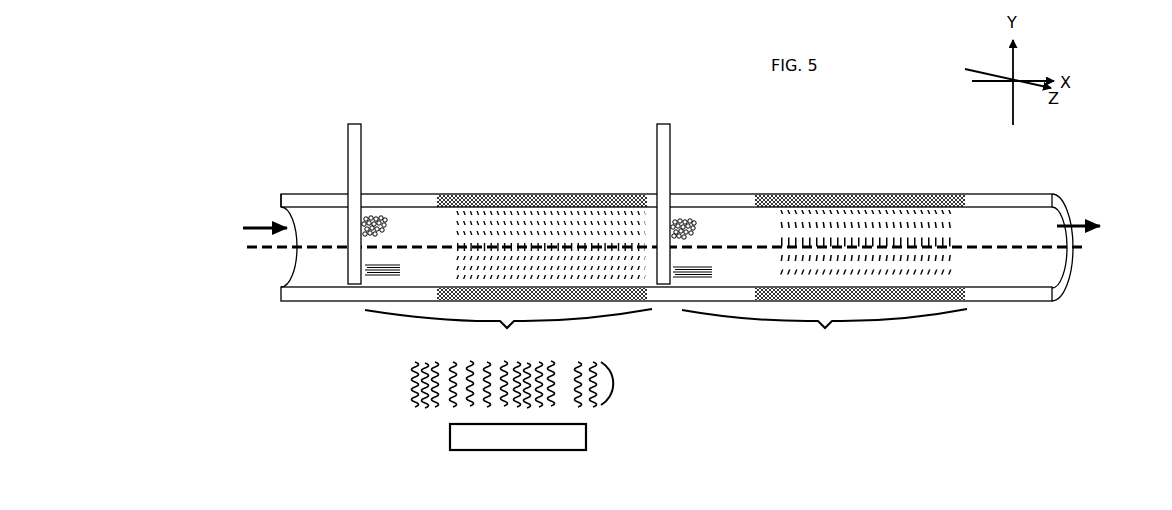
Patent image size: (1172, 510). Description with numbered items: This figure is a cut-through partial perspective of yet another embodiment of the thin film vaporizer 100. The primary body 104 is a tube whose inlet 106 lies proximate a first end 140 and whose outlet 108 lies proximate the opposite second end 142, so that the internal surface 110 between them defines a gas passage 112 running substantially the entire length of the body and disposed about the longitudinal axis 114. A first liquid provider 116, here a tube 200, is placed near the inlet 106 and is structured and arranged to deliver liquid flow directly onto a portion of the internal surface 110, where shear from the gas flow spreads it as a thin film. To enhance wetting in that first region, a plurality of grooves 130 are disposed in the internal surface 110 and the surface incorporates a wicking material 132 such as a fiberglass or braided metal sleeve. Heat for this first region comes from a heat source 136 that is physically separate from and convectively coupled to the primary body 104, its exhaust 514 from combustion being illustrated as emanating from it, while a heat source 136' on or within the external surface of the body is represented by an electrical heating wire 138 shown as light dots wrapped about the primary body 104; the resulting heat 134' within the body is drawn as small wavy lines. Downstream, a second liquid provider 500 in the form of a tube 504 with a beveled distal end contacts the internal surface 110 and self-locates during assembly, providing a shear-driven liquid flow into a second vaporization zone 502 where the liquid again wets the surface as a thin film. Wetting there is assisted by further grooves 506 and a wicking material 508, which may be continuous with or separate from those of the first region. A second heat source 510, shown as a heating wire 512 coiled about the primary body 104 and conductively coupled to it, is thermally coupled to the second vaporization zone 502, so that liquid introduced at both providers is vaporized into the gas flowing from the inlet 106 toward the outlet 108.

The vaporizer 100 is at (696, 243).
The primary body 104 is at (990, 194).
The inlet 106 is at (279, 273).
The outlet 108 is at (1045, 276).
The internal surface 110 is at (1027, 286).
The gas passage 112 is at (1016, 235).
The longitudinal axis 114 is at (651, 249).
The first liquid provider 116 is at (346, 177).
The grooves 130 is at (401, 268).
The wicking material 132 is at (388, 222).
The heat 134' is at (542, 221).
The heat source 136 is at (518, 437).
The heat source 136' is at (551, 213).
The electrical heating wire 138 is at (523, 219).
The first end 140 is at (281, 207).
The second end 142 is at (1062, 292).
The tube 200 is at (352, 148).
The second liquid provider 500 is at (653, 176).
The second vaporization zone 502 is at (824, 329).
The tube 504 is at (660, 145).
The grooves 506 is at (712, 270).
The wicking material 508 is at (696, 228).
The second heat source 510 is at (860, 225).
The heating wire 512 is at (829, 200).
The exhaust 514 is at (613, 385).